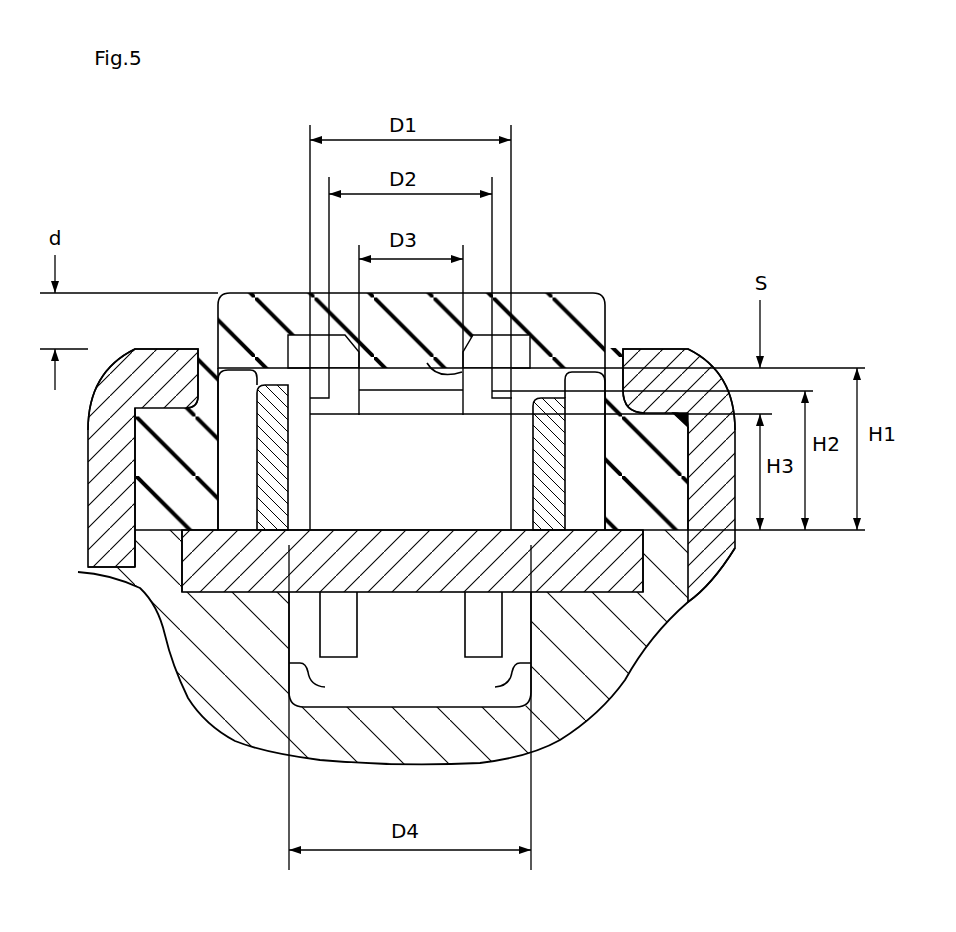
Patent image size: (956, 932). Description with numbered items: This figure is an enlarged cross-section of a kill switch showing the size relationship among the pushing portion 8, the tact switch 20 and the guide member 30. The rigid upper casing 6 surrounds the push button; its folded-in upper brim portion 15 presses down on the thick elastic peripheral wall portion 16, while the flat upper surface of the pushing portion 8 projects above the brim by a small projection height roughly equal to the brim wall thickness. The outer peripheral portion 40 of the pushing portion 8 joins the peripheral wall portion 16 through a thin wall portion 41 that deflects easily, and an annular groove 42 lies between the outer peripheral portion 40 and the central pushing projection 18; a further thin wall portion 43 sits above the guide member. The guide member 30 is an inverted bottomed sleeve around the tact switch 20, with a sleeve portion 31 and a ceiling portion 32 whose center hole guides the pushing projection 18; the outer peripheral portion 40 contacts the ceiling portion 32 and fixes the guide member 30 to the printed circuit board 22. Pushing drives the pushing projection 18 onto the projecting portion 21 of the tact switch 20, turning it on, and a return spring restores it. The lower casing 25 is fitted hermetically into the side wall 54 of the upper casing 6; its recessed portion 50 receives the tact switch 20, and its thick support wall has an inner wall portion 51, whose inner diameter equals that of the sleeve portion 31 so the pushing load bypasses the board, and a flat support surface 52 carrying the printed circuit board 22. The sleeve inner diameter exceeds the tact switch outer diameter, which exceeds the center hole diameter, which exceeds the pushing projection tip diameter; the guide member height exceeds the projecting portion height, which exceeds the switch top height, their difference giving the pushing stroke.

The upper casing 6 is at (86, 432).
The pushing portion 8 is at (548, 365).
The upper brim portion 15 is at (167, 357).
The peripheral wall portion 16 is at (147, 510).
The pushing projection 18 is at (440, 375).
The tact switch 20 is at (415, 487).
The projecting portion 21 is at (345, 290).
The printed circuit board 22 is at (218, 537).
The lower casing 25 is at (223, 733).
The guide member 30 is at (257, 590).
The sleeve portion 31 is at (243, 497).
The ceiling portion 32 is at (270, 363).
The outer peripheral portion 40 is at (612, 377).
The thin wall portion 41 is at (607, 353).
The annular groove 42 is at (288, 360).
The thin wall portion 43 is at (557, 350).
The recessed portion 50 is at (430, 708).
The inner wall portion 51 is at (325, 687).
The support surface 52 is at (580, 592).
The side wall 54 is at (108, 470).